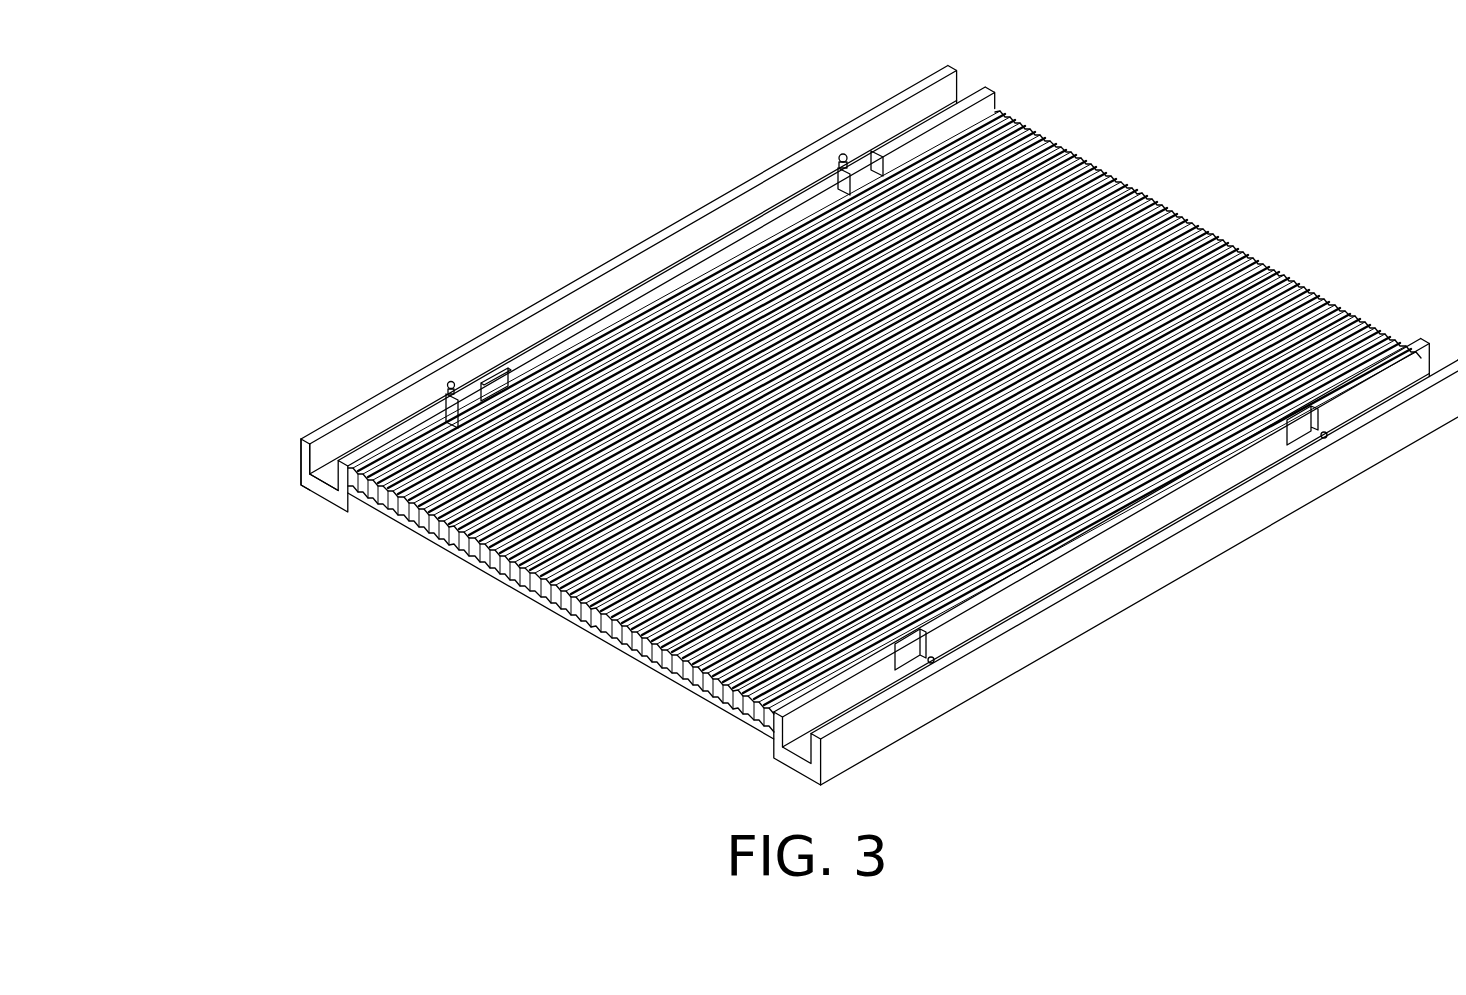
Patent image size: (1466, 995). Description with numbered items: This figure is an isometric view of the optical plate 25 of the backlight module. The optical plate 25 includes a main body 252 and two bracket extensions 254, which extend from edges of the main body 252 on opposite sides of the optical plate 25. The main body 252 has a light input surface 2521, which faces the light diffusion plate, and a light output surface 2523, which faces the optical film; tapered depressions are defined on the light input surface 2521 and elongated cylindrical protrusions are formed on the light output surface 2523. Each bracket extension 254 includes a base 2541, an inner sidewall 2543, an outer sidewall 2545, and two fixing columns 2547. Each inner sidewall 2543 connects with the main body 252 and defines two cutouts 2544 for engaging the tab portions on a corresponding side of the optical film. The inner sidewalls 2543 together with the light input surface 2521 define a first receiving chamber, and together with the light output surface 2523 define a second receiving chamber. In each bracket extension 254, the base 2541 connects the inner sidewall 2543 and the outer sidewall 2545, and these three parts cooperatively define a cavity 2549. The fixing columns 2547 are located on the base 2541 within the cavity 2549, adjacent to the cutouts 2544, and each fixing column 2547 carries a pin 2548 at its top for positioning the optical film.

The optical plate 25 is at (684, 158).
The main body 252 is at (666, 676).
The light input surface 2521 is at (433, 549).
The light output surface 2523 is at (557, 605).
The bracket extension 254 is at (330, 296).
The base 2541 is at (298, 493).
The inner sidewall 2543 is at (404, 412).
The outer sidewall 2545 is at (292, 446).
The cavity 2549 is at (318, 442).
The fixing column 2547 is at (441, 373).
The pin 2548 is at (831, 148).
The cutout 2544 is at (868, 142).